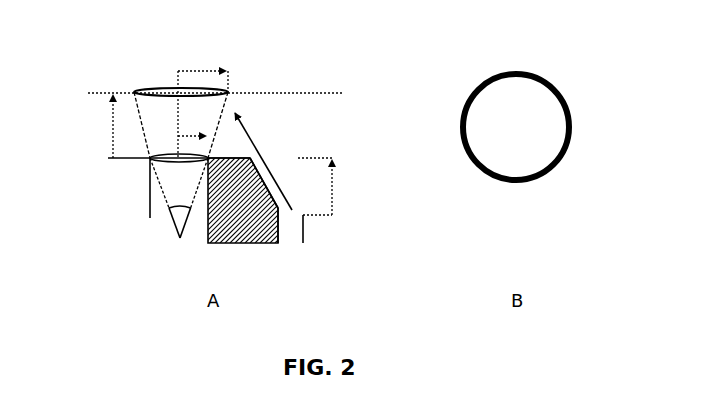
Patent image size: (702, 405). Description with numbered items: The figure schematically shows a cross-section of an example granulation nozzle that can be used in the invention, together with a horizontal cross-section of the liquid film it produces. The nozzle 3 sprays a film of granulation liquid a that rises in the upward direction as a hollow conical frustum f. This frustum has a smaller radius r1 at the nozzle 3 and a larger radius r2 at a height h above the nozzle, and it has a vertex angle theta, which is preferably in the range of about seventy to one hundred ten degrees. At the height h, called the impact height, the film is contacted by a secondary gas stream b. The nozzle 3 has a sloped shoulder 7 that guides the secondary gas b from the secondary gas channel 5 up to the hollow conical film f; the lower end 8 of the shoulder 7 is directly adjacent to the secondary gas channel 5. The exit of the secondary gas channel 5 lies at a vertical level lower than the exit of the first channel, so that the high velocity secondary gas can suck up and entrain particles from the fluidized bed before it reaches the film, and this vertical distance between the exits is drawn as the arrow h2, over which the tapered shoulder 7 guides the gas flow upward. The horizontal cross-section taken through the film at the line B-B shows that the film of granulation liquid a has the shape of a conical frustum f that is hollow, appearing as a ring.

The nozzle 3 is at (267, 188).
The secondary gas channel 5 is at (305, 237).
The sloped shoulder 7 is at (262, 171).
The lower end of the shoulder 8 is at (293, 230).
The film of granulation liquid a is at (233, 98).
The secondary gas stream b is at (257, 137).
The hollow conical frustum f is at (126, 111).
The height h is at (109, 130).
The vertical distance between the exits h2 is at (334, 180).
The smaller radius r1 is at (200, 136).
The larger radius r2 is at (190, 70).
The vertex angle theta is at (171, 233).
The section line B-B is at (235, 94).